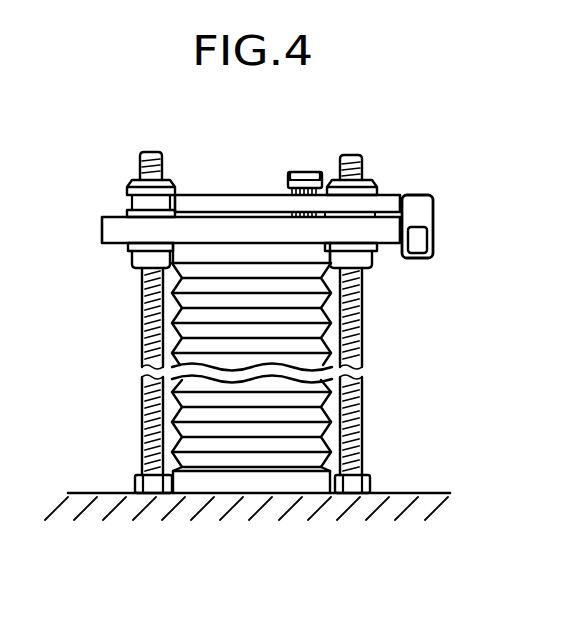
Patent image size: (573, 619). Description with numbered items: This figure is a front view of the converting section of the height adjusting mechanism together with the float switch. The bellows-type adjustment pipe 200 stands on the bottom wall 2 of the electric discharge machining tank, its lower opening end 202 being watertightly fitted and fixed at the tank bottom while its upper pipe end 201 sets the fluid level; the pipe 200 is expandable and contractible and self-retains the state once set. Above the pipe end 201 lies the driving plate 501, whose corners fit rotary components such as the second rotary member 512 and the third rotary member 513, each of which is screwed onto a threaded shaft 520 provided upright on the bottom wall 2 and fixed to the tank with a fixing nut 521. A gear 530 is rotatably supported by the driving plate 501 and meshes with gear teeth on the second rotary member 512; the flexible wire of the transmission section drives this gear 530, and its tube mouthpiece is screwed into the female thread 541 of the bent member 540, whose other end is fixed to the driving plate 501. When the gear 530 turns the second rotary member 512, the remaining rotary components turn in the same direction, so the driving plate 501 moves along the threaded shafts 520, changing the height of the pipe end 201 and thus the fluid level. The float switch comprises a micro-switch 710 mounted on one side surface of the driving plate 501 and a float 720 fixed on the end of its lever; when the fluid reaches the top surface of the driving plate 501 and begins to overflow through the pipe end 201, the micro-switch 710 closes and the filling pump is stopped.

The bottom wall 2 is at (395, 512).
The adjustment pipe 200 is at (305, 357).
The pipe end 201 is at (298, 257).
The lower opening end 202 is at (248, 482).
The driving plate 501 is at (115, 232).
The second rotary member 512 is at (380, 190).
The third rotary member 513 is at (124, 192).
The threaded shaft 520 is at (143, 330).
The fixing nut 521 is at (137, 480).
The gear 530 is at (287, 193).
The bent member 540 is at (225, 202).
The female thread 541 is at (318, 173).
The micro-switch 710 is at (425, 212).
The float 720 is at (422, 238).